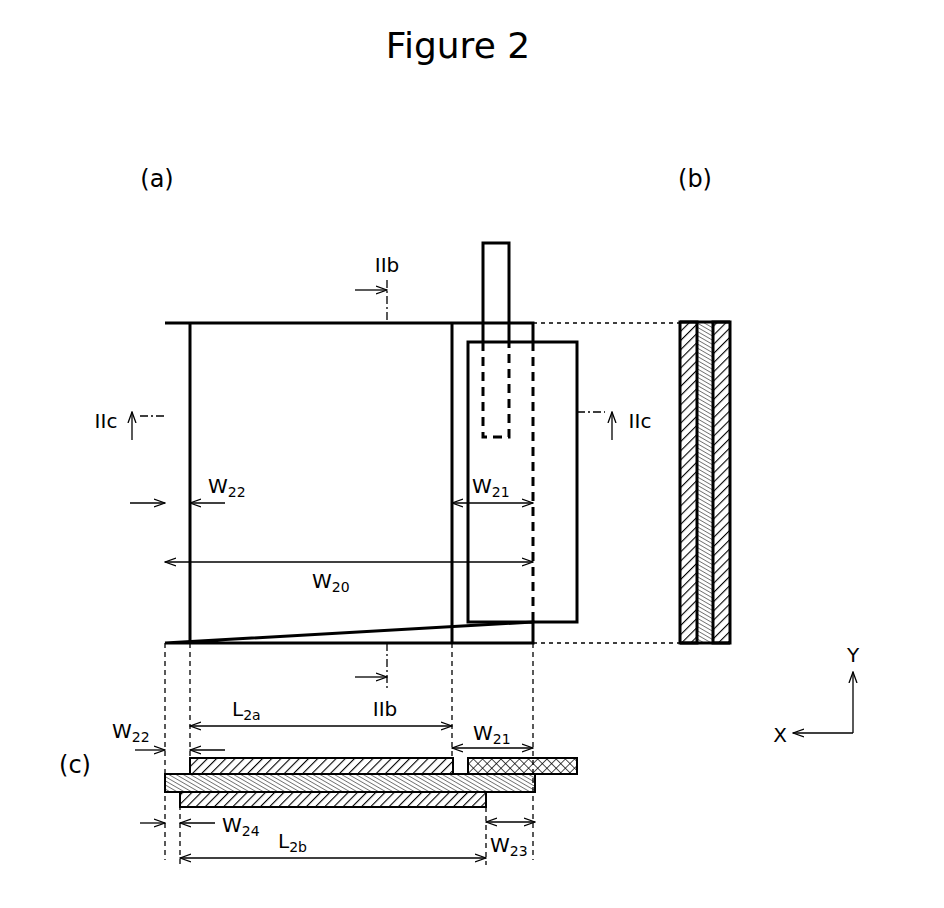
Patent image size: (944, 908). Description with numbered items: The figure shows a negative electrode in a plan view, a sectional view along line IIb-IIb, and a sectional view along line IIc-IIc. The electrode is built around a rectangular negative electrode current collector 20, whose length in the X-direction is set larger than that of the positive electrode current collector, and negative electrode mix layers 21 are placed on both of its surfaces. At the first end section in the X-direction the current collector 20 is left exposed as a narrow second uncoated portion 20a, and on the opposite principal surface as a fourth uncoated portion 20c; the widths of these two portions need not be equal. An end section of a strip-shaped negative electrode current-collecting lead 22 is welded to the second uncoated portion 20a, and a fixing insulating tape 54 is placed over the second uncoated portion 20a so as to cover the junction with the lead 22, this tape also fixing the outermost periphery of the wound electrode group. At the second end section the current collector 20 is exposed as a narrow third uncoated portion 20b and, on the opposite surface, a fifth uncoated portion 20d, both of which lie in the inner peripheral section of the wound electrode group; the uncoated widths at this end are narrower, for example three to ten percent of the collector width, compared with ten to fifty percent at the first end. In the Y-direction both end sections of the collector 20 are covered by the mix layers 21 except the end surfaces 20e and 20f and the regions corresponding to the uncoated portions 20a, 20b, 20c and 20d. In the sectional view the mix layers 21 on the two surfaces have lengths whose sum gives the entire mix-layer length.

The negative electrode current collector 20 is at (165, 782).
The negative electrode mix layers 21 is at (312, 643).
The negative electrode current-collecting lead 22 is at (497, 278).
The fixing insulating tape 54 is at (577, 392).
The second uncoated portion 20a is at (488, 643).
The third uncoated portion 20b is at (172, 592).
The fourth uncoated portion 20c is at (518, 797).
The fifth uncoated portion 20d is at (175, 795).
The end surface 20e is at (706, 322).
The end surface 20f is at (700, 645).